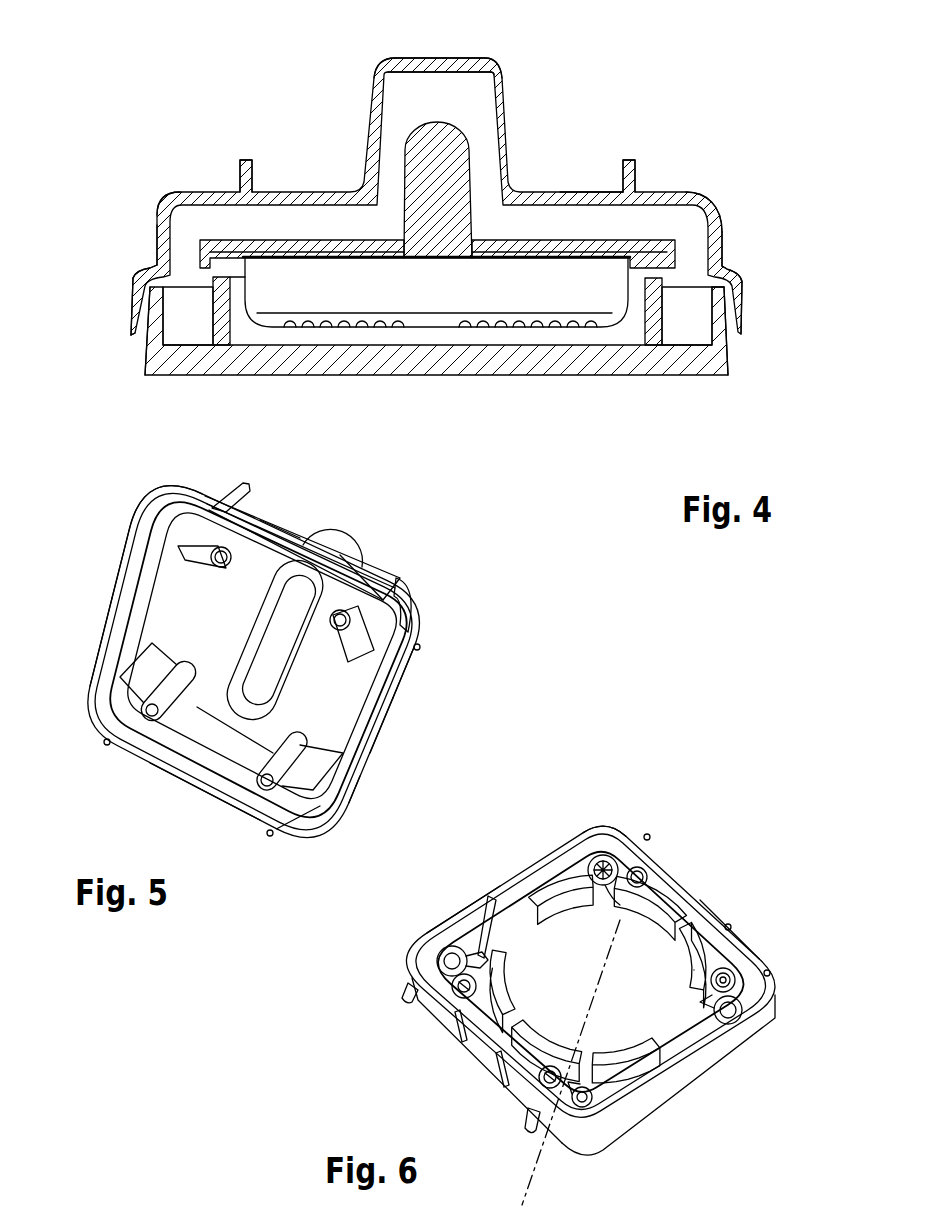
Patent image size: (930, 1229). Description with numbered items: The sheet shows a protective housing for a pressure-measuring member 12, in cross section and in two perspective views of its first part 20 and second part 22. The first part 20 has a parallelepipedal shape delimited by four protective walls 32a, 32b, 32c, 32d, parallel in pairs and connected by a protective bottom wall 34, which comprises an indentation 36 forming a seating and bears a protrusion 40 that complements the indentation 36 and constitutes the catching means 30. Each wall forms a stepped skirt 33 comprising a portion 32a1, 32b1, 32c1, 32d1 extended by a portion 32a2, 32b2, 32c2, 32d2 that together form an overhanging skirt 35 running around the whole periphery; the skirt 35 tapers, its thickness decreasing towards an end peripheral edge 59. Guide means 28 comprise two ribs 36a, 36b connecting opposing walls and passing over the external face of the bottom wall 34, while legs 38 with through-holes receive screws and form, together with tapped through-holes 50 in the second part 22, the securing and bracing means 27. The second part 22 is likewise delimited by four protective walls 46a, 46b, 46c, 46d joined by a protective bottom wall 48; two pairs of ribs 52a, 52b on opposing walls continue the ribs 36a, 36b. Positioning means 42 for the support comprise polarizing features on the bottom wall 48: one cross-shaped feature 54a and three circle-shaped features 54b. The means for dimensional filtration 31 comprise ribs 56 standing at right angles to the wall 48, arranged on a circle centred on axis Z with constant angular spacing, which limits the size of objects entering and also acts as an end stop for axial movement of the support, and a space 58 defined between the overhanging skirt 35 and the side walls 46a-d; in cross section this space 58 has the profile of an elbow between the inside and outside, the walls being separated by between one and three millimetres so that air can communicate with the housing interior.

In FIG. 4, the member 12 is at (435, 130).
In FIG. 4, the first part 20 is at (432, 230).
In FIG. 5, the first part 20 is at (278, 668).
In FIG. 4, the second part 22 is at (438, 357).
In FIG. 6, the second part 22 is at (561, 982).
In FIG. 5, the bracing means 27 is at (122, 692).
In FIG. 4, the guide means 28 is at (616, 110).
In FIG. 4, the catching means 30 is at (368, 56).
In FIG. 4, the means for dimensional filtration 31 is at (131, 338).
In FIG. 6, the means for dimensional filtration 31 is at (508, 898).
In FIG. 4, the stepped skirt 33 is at (140, 248).
In FIG. 4, the protective bottom wall 34 is at (313, 195).
In FIG. 5, the protective bottom wall 34 is at (160, 640).
In FIG. 4, the overhanging skirt 35 is at (123, 298).
In FIG. 4, the indentation 36 is at (469, 96).
In FIG. 5, the indentation 36 is at (273, 643).
In FIG. 4, the rib 36a is at (245, 160).
In FIG. 5, the rib 36a is at (413, 582).
In FIG. 4, the rib 36b is at (629, 160).
In FIG. 5, the rib 36b is at (108, 745).
In FIG. 5, the legs 38 is at (252, 505).
In FIG. 4, the protrusion 40 is at (490, 68).
In FIG. 5, the protrusion 40 is at (345, 530).
In FIG. 6, the positioning means 42 is at (618, 842).
In FIG. 6, the protective wall 46a is at (490, 1053).
In FIG. 4, the protective wall 46b is at (726, 340).
In FIG. 6, the protective wall 46b is at (703, 1065).
In FIG. 6, the protective wall 46c is at (707, 920).
In FIG. 4, the protective wall 46d is at (145, 360).
In FIG. 6, the protective wall 46d is at (478, 905).
In FIG. 4, the protective bottom wall 48 is at (566, 345).
In FIG. 6, the protective bottom wall 48 is at (643, 955).
In FIG. 6, the tapped through-holes 50 is at (508, 1076).
In FIG. 6, the ribs 52a is at (410, 990).
In FIG. 6, the ribs 52b is at (650, 836).
In FIG. 6, the polarizing feature of first type 54a is at (600, 858).
In FIG. 6, the polarizing feature of second type 54b is at (452, 948).
In FIG. 4, the ribs 56 is at (190, 272).
In FIG. 6, the ribs 56 is at (640, 1068).
In FIG. 4, the space 58 is at (142, 312).
In FIG. 4, the end peripheral edge 59 is at (742, 328).
In FIG. 5, the protective wall 32a is at (275, 530).
In FIG. 5, the portion 32a1 is at (300, 538).
In FIG. 5, the portion 32a2 is at (373, 596).
In FIG. 5, the protective wall 32b is at (380, 755).
In FIG. 4, the portion 32b1 is at (712, 226).
In FIG. 5, the portion 32b1 is at (396, 710).
In FIG. 4, the portion 32b2 is at (745, 300).
In FIG. 5, the portion 32b2 is at (360, 780).
In FIG. 5, the protective wall 32c is at (213, 785).
In FIG. 5, the portion 32c1 is at (182, 735).
In FIG. 5, the portion 32c2 is at (262, 820).
In FIG. 5, the protective wall 32d is at (122, 583).
In FIG. 4, the portion 32d1 is at (160, 217).
In FIG. 5, the portion 32d1 is at (178, 530).
In FIG. 4, the portion 32d2 is at (133, 285).
In FIG. 5, the portion 32d2 is at (136, 560).
In FIG. 6, the axis Z is at (612, 940).